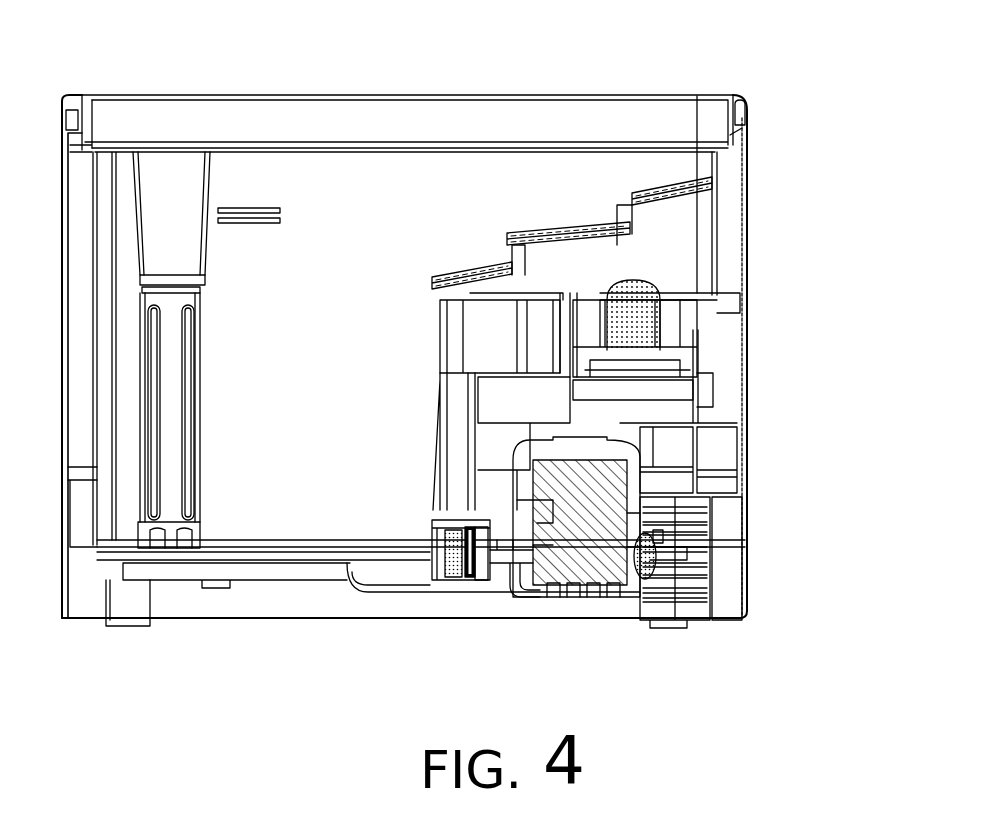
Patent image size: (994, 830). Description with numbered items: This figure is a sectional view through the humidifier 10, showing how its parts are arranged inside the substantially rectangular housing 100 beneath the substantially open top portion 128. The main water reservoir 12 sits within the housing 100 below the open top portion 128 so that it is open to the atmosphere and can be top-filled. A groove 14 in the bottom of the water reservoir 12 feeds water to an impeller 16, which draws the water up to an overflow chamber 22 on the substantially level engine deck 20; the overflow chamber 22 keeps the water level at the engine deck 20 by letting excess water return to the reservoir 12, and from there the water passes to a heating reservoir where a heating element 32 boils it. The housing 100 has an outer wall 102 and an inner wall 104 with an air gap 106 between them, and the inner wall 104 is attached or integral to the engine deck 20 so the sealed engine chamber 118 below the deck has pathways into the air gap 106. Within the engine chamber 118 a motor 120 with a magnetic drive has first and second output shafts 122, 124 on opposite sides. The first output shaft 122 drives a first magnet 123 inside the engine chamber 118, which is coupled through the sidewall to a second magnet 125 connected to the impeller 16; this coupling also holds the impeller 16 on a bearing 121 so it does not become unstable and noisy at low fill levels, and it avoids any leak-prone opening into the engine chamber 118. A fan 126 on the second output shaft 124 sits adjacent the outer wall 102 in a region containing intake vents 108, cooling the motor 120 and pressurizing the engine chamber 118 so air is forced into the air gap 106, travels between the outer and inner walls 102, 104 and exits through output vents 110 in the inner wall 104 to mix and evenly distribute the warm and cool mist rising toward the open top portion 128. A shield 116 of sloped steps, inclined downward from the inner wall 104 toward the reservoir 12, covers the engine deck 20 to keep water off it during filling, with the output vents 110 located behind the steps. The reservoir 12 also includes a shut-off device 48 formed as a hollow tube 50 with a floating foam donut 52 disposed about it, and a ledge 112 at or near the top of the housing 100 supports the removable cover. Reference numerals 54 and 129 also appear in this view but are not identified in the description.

The humidifier 10 is at (684, 56).
The main water reservoir 12 is at (321, 421).
The groove 14 is at (397, 550).
The impeller 16 is at (447, 578).
The engine deck 20 is at (540, 292).
The overflow chamber 22 is at (497, 348).
The heating element 32 is at (625, 300).
The shut-off device 48 is at (224, 260).
The hollow tube 50 is at (178, 383).
The floating foam donut 52 is at (168, 532).
The collar 54 is at (200, 290).
The housing 100 is at (740, 137).
The outer wall 102 is at (742, 226).
The inner wall 104 is at (722, 205).
The air gap 106 is at (732, 263).
The intake vents 108 is at (745, 542).
The output vents 110 is at (247, 212).
The ledge 112 is at (90, 142).
The shield 116 is at (563, 226).
The engine chamber 118 is at (630, 424).
The motor 120 is at (592, 562).
The bearing 121 is at (433, 520).
The first output shaft 122 is at (512, 570).
The first magnet 123 is at (481, 580).
The second output shaft 124 is at (635, 595).
The second magnet 125 is at (462, 580).
The fan 126 is at (691, 582).
The open top portion 128 is at (345, 188).
The foot 129 is at (128, 628).